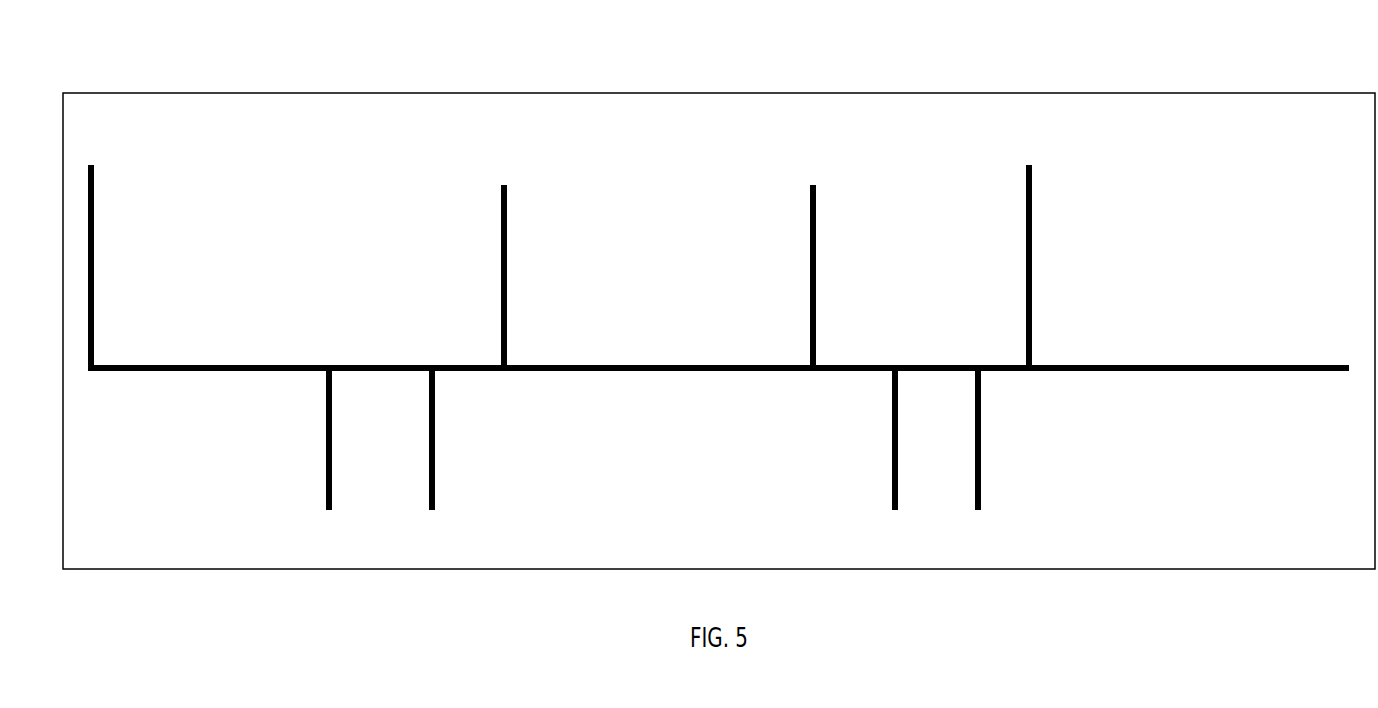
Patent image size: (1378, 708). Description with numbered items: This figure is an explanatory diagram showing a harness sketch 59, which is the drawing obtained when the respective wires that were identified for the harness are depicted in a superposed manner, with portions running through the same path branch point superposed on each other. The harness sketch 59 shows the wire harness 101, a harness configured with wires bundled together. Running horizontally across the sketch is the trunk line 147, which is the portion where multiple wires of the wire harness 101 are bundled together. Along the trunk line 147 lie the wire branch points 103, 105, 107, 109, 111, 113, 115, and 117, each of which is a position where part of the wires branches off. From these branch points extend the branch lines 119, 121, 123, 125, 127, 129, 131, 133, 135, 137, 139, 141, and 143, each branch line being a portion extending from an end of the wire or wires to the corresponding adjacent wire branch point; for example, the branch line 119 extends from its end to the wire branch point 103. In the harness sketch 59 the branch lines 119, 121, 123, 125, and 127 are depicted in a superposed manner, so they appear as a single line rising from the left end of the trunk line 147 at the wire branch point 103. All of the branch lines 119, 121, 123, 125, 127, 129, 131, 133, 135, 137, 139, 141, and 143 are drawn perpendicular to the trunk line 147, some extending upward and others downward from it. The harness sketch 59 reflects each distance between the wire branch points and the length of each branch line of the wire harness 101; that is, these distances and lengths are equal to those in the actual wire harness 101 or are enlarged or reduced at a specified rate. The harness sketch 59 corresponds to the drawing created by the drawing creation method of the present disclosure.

The harness sketch 59 is at (733, 92).
The wire harness 101 is at (1241, 203).
The wire branch point 103 is at (91, 372).
The wire branch point 105 is at (331, 365).
The wire branch point 107 is at (434, 365).
The wire branch point 109 is at (505, 372).
The wire branch point 111 is at (813, 372).
The wire branch point 113 is at (897, 365).
The wire branch point 115 is at (980, 365).
The wire branch point 117 is at (1030, 372).
The branch line 119 is at (227, 266).
The branch line 121 is at (227, 266).
The branch line 123 is at (227, 266).
The branch line 125 is at (227, 266).
The branch line 127 is at (95, 236).
The branch line 129 is at (332, 455).
The branch line 131 is at (435, 455).
The branch line 133 is at (507, 232).
The branch line 135 is at (810, 232).
The branch line 137 is at (898, 455).
The branch line 139 is at (981, 455).
The branch line 141 is at (1032, 232).
The branch line 143 is at (1183, 372).
The trunk line 147 is at (655, 372).